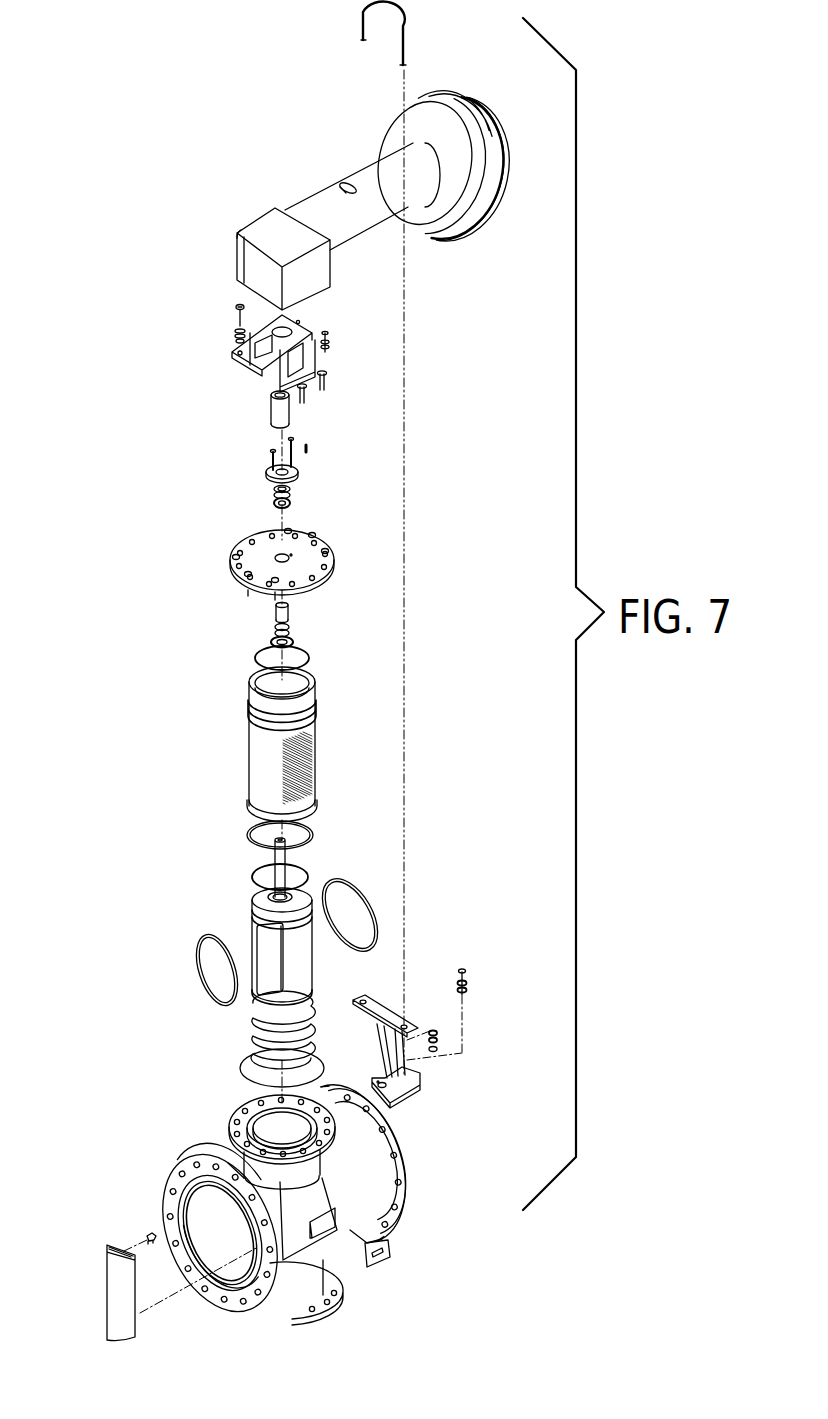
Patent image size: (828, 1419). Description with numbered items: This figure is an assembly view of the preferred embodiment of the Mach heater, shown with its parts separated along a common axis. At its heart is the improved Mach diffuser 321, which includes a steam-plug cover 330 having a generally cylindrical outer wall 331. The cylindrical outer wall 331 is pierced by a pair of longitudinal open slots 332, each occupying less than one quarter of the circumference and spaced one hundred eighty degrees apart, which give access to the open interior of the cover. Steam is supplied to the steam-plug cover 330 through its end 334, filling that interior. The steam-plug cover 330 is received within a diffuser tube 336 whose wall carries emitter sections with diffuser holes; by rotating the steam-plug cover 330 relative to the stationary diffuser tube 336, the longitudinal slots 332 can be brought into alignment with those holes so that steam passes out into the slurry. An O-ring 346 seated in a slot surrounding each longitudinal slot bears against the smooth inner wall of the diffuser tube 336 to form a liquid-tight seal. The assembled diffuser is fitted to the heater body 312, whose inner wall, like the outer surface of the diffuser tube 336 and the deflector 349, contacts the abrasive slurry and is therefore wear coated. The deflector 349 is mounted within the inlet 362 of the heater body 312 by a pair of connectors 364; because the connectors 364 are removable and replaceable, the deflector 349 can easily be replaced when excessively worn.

The heater body 312 is at (362, 1192).
The Mach diffuser 321 is at (322, 841).
The steam-plug cover 330 is at (312, 931).
The cylindrical outer wall 331 is at (298, 972).
The longitudinal open slots 332 is at (260, 938).
The end 334 is at (258, 994).
The diffuser tube 336 is at (312, 744).
The O-ring 346 is at (360, 883).
The deflector 349 is at (112, 1302).
The inlet 362 is at (188, 1210).
The connectors 364 is at (146, 1238).